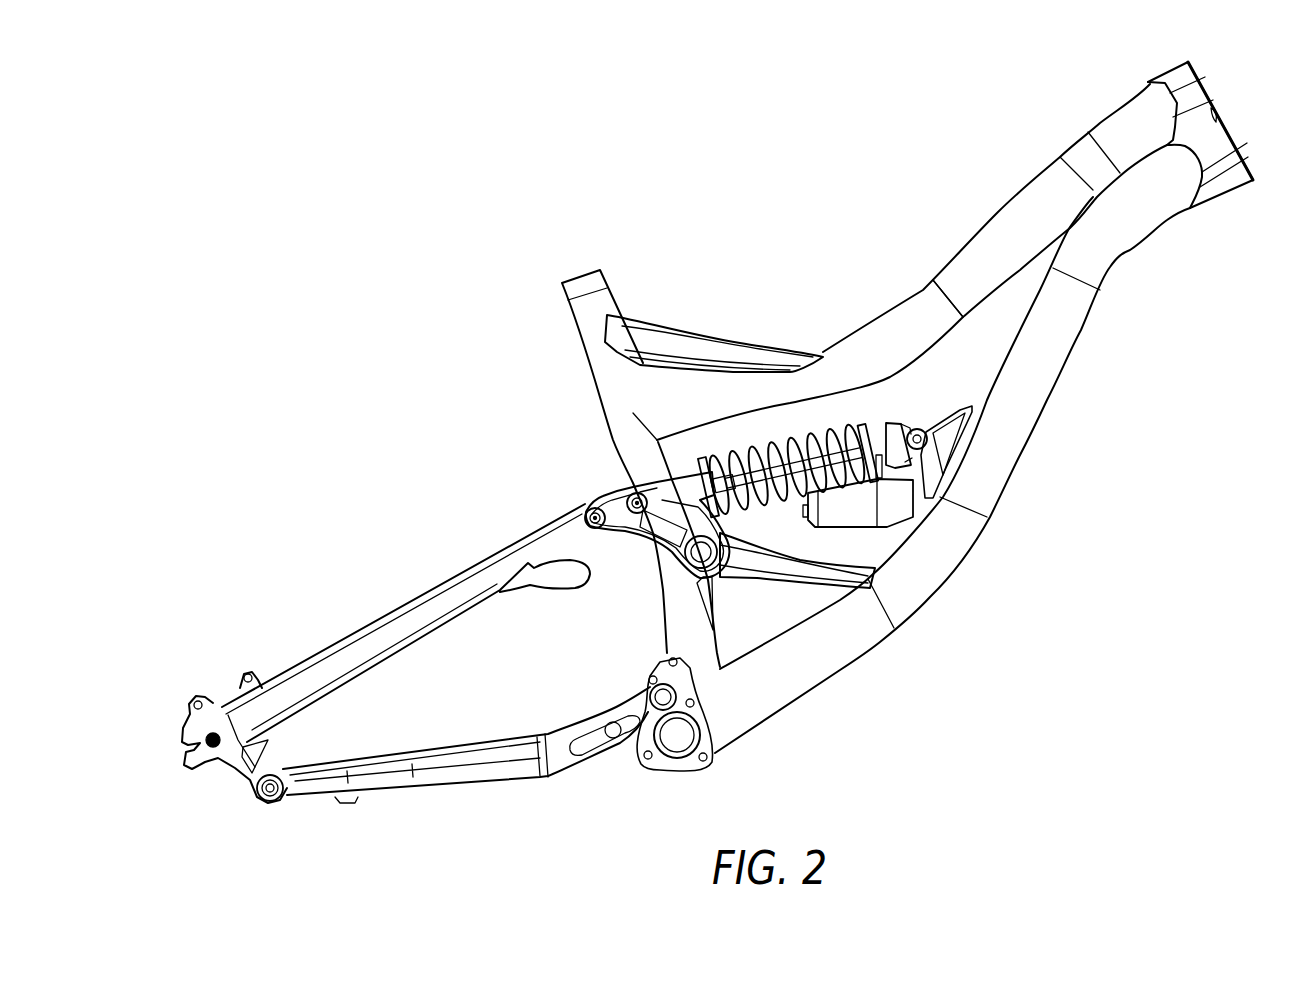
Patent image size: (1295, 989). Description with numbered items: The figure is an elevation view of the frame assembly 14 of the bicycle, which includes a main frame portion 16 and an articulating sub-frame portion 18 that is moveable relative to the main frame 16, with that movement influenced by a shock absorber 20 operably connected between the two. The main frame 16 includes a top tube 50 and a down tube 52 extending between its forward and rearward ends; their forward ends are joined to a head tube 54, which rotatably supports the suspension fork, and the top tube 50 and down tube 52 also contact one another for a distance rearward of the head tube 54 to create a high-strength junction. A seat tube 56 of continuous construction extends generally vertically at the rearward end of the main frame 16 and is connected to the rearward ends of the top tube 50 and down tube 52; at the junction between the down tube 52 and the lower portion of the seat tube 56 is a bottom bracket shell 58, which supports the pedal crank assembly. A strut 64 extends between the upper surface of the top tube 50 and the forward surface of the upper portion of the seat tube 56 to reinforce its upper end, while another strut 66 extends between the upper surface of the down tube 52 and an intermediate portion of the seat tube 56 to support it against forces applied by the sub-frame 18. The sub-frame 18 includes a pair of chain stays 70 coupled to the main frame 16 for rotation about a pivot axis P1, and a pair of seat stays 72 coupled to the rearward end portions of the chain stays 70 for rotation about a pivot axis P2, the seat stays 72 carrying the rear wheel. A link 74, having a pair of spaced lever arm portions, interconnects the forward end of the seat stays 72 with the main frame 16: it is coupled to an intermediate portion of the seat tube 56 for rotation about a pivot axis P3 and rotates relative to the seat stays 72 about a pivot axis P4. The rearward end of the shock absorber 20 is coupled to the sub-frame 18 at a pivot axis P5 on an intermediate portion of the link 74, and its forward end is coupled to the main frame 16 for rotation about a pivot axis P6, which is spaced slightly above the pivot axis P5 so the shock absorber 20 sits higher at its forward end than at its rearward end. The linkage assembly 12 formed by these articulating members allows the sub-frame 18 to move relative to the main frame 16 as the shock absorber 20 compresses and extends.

The linkage assembly 12 is at (584, 490).
The frame assembly 14 is at (846, 258).
The main frame portion 16 is at (1002, 211).
The sub-frame portion 18 is at (449, 573).
The shock absorber 20 is at (833, 423).
The top tube 50 is at (937, 280).
The down tube 52 is at (1035, 437).
The head tube 54 is at (1216, 113).
The seat tube 56 is at (577, 340).
The bottom bracket shell 58 is at (680, 765).
The strut 64 is at (700, 335).
The strut 66 is at (767, 593).
The chain stays 70 is at (432, 795).
The seat stays 72 is at (417, 643).
The link 74 is at (637, 545).
The pivot axis P1 is at (652, 690).
The pivot axis P2 is at (270, 805).
The pivot axis P3 is at (720, 575).
The pivot axis P4 is at (583, 515).
The pivot axis P5 is at (628, 488).
The pivot axis P6 is at (921, 428).